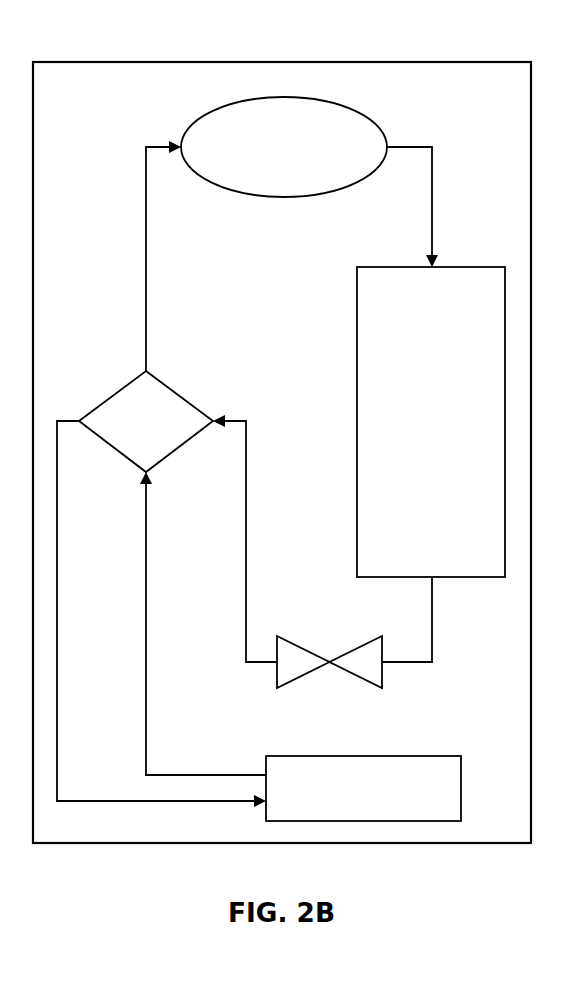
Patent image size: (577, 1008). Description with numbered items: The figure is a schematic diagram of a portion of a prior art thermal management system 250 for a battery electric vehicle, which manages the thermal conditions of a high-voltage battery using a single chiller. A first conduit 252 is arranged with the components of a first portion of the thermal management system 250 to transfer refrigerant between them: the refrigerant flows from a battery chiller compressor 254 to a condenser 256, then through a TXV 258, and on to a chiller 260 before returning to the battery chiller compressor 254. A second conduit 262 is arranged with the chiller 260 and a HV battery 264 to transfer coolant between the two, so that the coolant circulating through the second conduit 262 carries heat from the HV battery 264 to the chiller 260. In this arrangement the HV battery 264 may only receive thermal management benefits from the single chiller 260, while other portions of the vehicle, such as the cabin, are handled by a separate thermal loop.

The thermal management system 250 is at (465, 43).
The first conduit 252 is at (163, 143).
The battery chiller compressor 254 is at (345, 103).
The condenser 256 is at (400, 267).
The TXV 258 is at (383, 672).
The chiller 260 is at (178, 395).
The second conduit 262 is at (146, 600).
The HV battery 264 is at (461, 778).